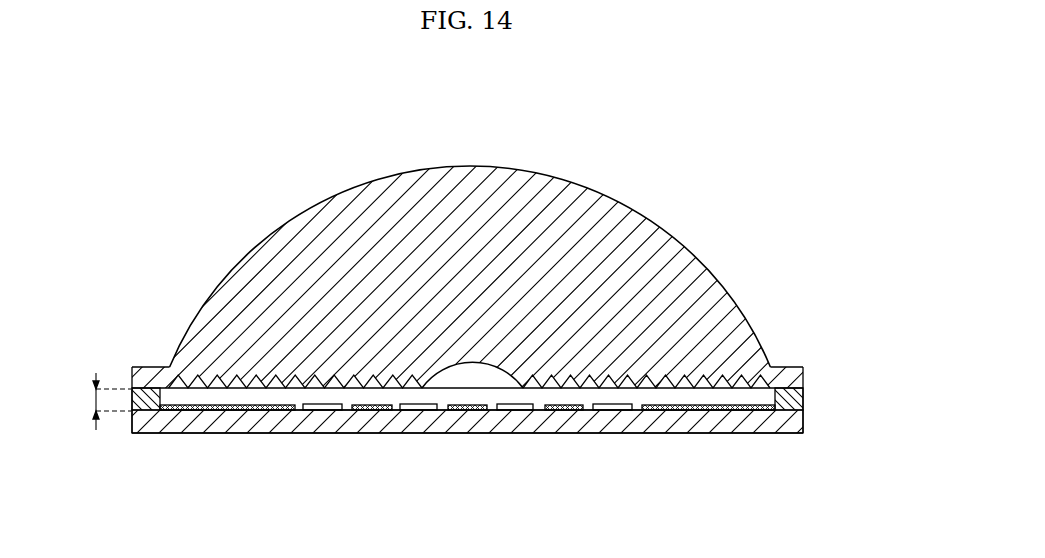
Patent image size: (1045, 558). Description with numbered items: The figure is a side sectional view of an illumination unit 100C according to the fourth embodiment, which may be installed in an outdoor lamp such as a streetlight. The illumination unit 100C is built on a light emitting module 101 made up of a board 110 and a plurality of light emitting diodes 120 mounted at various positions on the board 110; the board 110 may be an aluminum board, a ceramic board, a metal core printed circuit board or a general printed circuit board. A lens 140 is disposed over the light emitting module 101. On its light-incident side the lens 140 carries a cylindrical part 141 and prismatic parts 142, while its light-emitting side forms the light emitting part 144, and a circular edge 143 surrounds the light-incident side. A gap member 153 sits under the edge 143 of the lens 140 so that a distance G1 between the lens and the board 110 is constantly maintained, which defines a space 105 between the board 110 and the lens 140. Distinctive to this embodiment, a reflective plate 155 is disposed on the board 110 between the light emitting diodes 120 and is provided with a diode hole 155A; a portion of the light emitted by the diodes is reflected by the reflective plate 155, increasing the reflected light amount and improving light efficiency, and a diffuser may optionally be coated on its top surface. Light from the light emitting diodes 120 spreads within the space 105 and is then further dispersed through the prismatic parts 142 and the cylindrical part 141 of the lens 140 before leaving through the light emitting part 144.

The illumination unit 100C is at (223, 103).
The light emitting module 101 is at (228, 436).
The space 105 is at (540, 402).
The board 110 is at (327, 433).
The light emitting diodes 120 is at (512, 412).
The lens 140 is at (680, 240).
The cylindrical part 141 is at (446, 368).
The prismatic parts 142 is at (636, 374).
The edge 143 is at (793, 379).
The light emitting part 144 is at (734, 302).
The gap member 153 is at (797, 396).
The reflective plate 155 is at (732, 410).
The diode hole 155A is at (633, 410).
The distance G1 is at (94, 401).